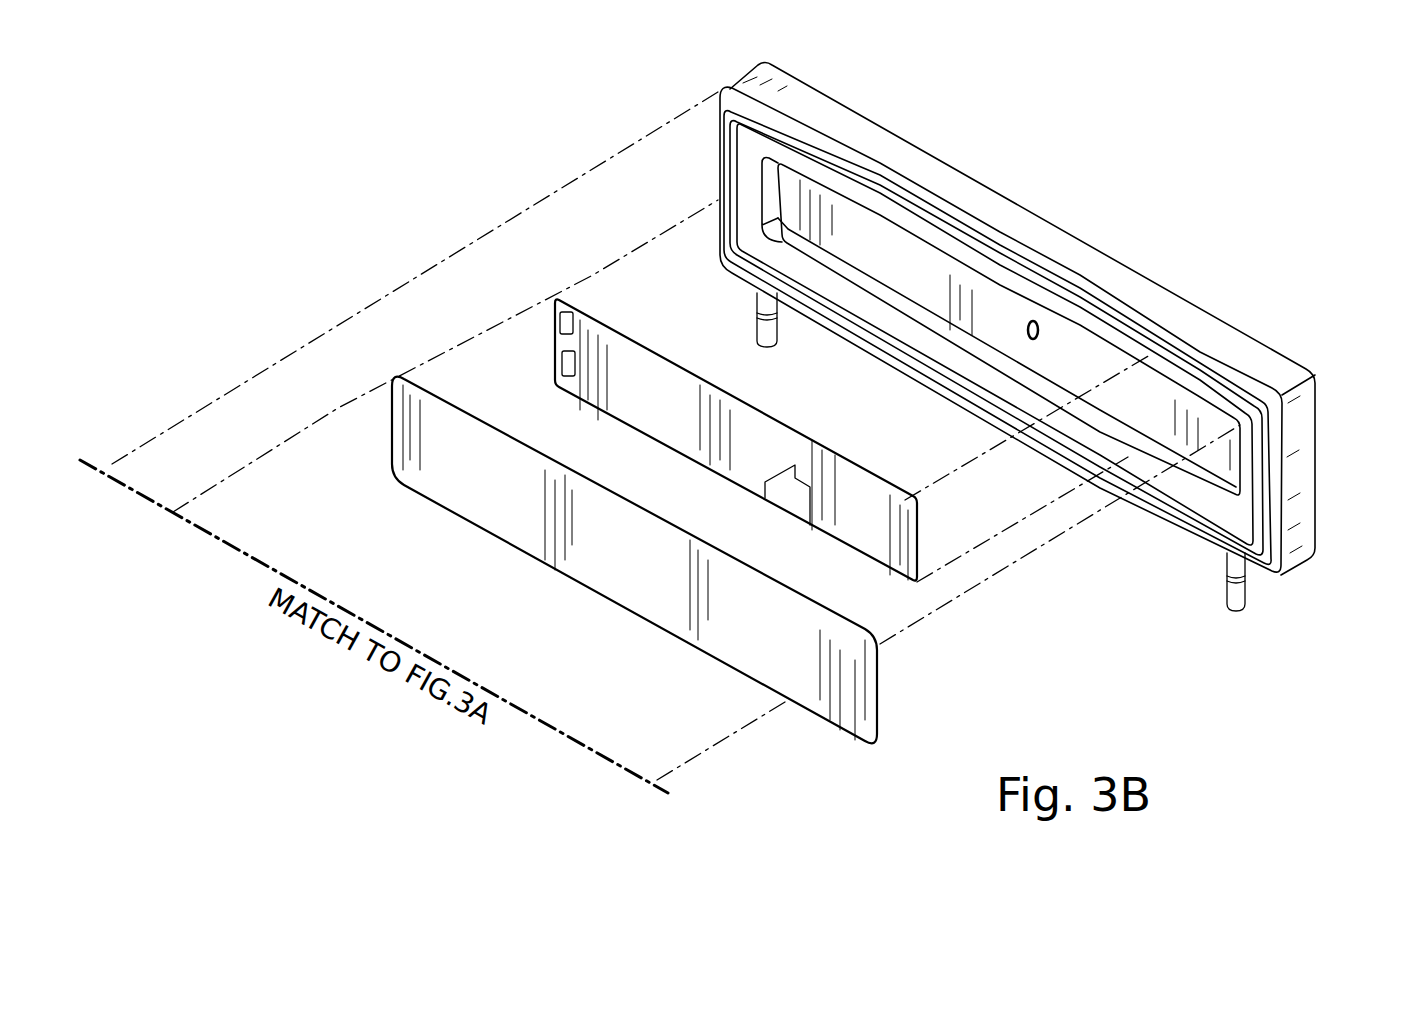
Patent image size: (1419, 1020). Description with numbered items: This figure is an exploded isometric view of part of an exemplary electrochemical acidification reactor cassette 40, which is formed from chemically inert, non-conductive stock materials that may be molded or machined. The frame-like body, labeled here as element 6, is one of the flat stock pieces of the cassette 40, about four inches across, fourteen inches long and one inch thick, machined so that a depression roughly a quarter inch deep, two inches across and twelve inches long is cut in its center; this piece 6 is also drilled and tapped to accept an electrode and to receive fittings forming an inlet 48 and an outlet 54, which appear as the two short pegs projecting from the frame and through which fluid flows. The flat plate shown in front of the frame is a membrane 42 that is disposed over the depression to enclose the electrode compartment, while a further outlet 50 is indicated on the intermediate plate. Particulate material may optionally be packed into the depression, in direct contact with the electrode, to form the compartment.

The electrochemical acidification reactor cassette 40 is at (403, 245).
The frame 6 is at (1310, 478).
The membrane 42 is at (815, 703).
The outlet 50 is at (862, 520).
The inlet 48 is at (779, 341).
The outlet 54 is at (1245, 590).